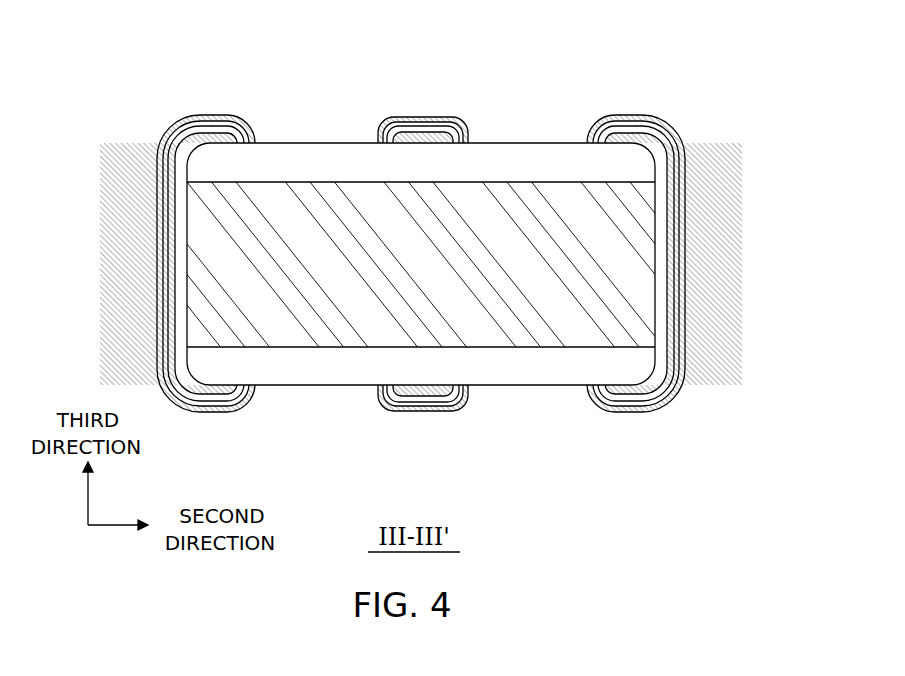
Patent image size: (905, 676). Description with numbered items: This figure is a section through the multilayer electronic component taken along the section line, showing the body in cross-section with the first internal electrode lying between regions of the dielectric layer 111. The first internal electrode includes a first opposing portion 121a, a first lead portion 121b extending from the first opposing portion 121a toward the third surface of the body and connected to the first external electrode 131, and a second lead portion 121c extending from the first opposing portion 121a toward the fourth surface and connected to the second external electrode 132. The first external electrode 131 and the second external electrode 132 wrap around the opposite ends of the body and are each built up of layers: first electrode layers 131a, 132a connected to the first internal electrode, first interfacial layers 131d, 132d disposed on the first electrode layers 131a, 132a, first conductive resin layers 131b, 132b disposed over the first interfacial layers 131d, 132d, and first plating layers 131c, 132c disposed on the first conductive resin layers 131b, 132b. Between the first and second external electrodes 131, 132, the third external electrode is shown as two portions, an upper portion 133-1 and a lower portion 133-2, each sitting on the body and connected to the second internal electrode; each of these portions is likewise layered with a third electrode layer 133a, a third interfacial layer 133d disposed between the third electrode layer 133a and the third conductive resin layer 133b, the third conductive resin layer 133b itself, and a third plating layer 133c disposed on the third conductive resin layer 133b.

The dielectric layer 111 is at (200, 368).
The first opposing portion 121a is at (413, 272).
The 1-1-th lead portion 121b is at (200, 272).
The 1-2-th lead portion 121c is at (645, 268).
The first external electrode 131 is at (127, 239).
The first electrode layer 131a is at (222, 143).
The first conductive resin layer 131b is at (172, 151).
The first plating layer 131c is at (166, 168).
The first interfacial layer 131d is at (160, 188).
The second external electrode 132 is at (715, 239).
The first electrode layer 132a is at (620, 143).
The first conductive resin layer 132b is at (672, 151).
The first plating layer 132c is at (678, 168).
The first interfacial layer 132d is at (683, 190).
The first center external electrode (top) 133-1 is at (277, 62).
The second center external electrode (bottom) 133-2 is at (277, 465).
The third electrode layer 133a is at (394, 133).
The third conductive resin layer 133b is at (409, 126).
The third plating layer 133c is at (438, 122).
The third interfacial layer 133d is at (463, 118).